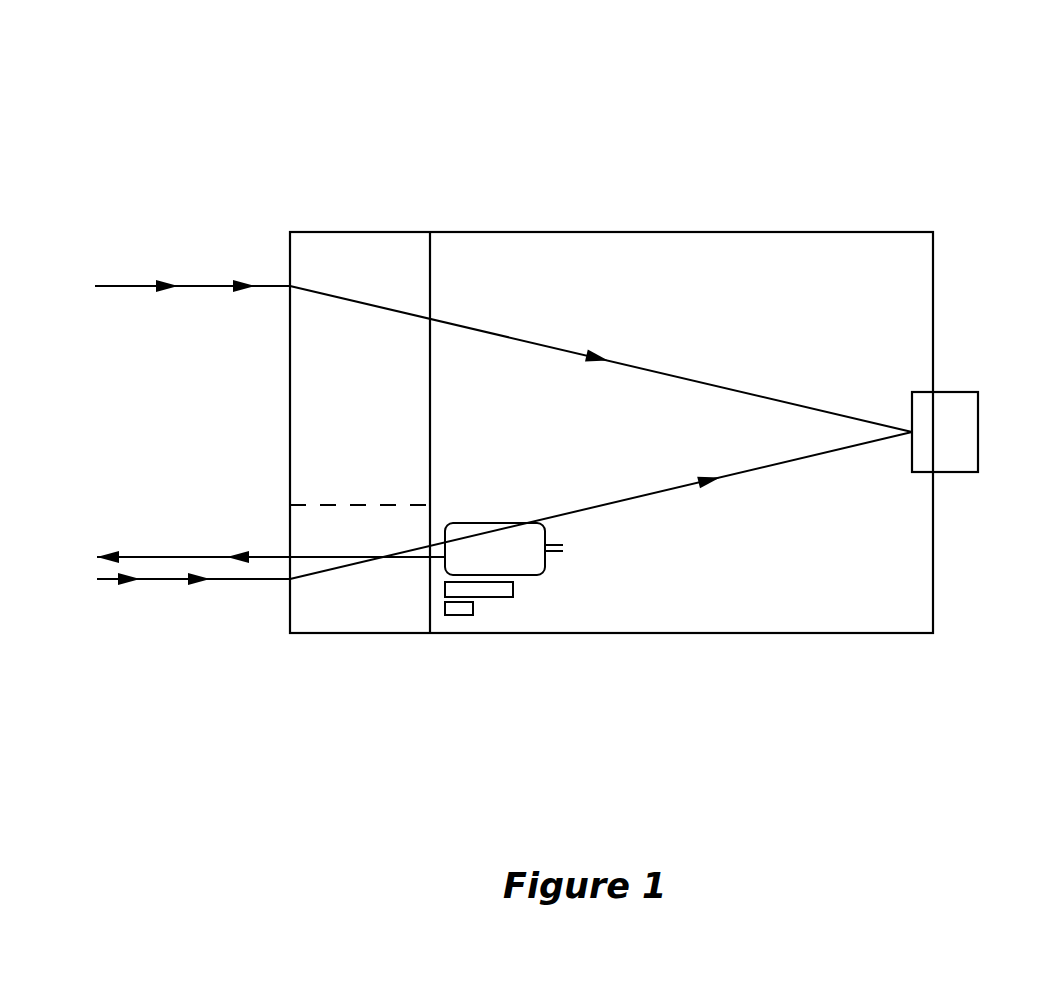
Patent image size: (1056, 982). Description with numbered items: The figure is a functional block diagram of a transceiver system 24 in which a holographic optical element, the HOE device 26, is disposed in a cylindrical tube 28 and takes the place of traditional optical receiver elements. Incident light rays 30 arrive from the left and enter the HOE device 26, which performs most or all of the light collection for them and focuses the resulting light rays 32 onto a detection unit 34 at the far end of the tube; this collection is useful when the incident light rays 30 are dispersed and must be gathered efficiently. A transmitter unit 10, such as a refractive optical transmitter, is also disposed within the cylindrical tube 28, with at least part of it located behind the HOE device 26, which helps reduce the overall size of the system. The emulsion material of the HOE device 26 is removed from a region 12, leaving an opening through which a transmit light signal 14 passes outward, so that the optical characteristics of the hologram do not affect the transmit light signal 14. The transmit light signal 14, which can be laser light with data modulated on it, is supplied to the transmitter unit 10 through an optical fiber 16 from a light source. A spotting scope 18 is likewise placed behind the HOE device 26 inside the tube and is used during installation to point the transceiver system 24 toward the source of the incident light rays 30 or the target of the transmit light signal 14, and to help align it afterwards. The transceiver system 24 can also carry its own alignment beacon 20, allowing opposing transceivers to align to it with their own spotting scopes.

The transmitter unit 10 is at (530, 562).
The region 12 is at (362, 598).
The transmit light signal 14 is at (152, 557).
The optical fiber 16 is at (563, 551).
The spotting scope 18 is at (490, 589).
The alignment beacon 20 is at (457, 612).
The transceiver system 24 is at (547, 90).
The HOE device 26 is at (352, 250).
The cylindrical tube 28 is at (610, 656).
The incident light rays 30 is at (190, 286).
The resulting light rays 32 is at (687, 377).
The detection unit 34 is at (958, 390).